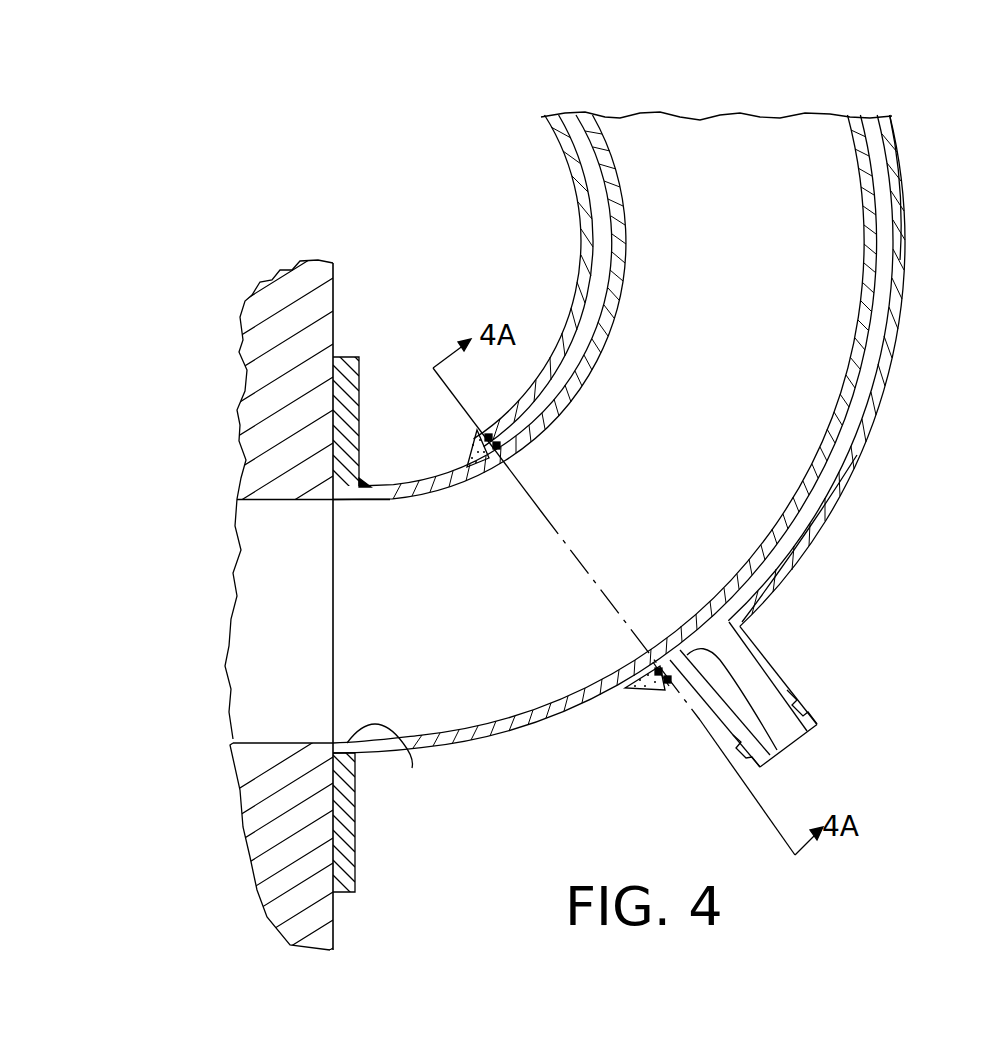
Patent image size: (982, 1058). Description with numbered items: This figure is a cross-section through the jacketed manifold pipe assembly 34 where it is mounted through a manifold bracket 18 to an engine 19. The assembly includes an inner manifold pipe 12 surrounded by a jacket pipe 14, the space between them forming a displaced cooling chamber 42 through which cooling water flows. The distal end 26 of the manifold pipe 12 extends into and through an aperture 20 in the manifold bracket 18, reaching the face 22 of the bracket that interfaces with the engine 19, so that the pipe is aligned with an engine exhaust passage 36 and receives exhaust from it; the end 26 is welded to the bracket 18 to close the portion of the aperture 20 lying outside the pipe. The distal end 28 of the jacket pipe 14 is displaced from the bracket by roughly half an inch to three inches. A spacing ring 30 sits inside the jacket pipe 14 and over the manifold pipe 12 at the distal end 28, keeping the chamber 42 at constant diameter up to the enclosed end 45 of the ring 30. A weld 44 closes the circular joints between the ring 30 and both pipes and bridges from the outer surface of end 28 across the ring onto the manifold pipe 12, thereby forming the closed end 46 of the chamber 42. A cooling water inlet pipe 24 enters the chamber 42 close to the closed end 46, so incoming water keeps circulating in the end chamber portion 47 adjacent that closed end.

The manifold pipe 12 is at (875, 285).
The jacket pipe 14 is at (830, 516).
The manifold bracket 18 is at (360, 838).
The engine 19 is at (337, 908).
The aperture 20 is at (391, 764).
The face 22 is at (330, 862).
The cooling water inlet pipe 24 is at (770, 662).
The distal end of manifold pipe 26 is at (320, 744).
The distal end of jacket pipe 28 is at (662, 690).
The spacing ring 30 is at (500, 440).
The jacketed manifold pipe assembly 34 is at (906, 190).
The engine exhaust passage 36 is at (253, 613).
The displaced cooling chamber 42 is at (848, 438).
The weld 44 is at (637, 690).
The enclosed end of ring 45 is at (674, 657).
The closed end 46 is at (668, 660).
The end chamber portion 47 is at (777, 747).